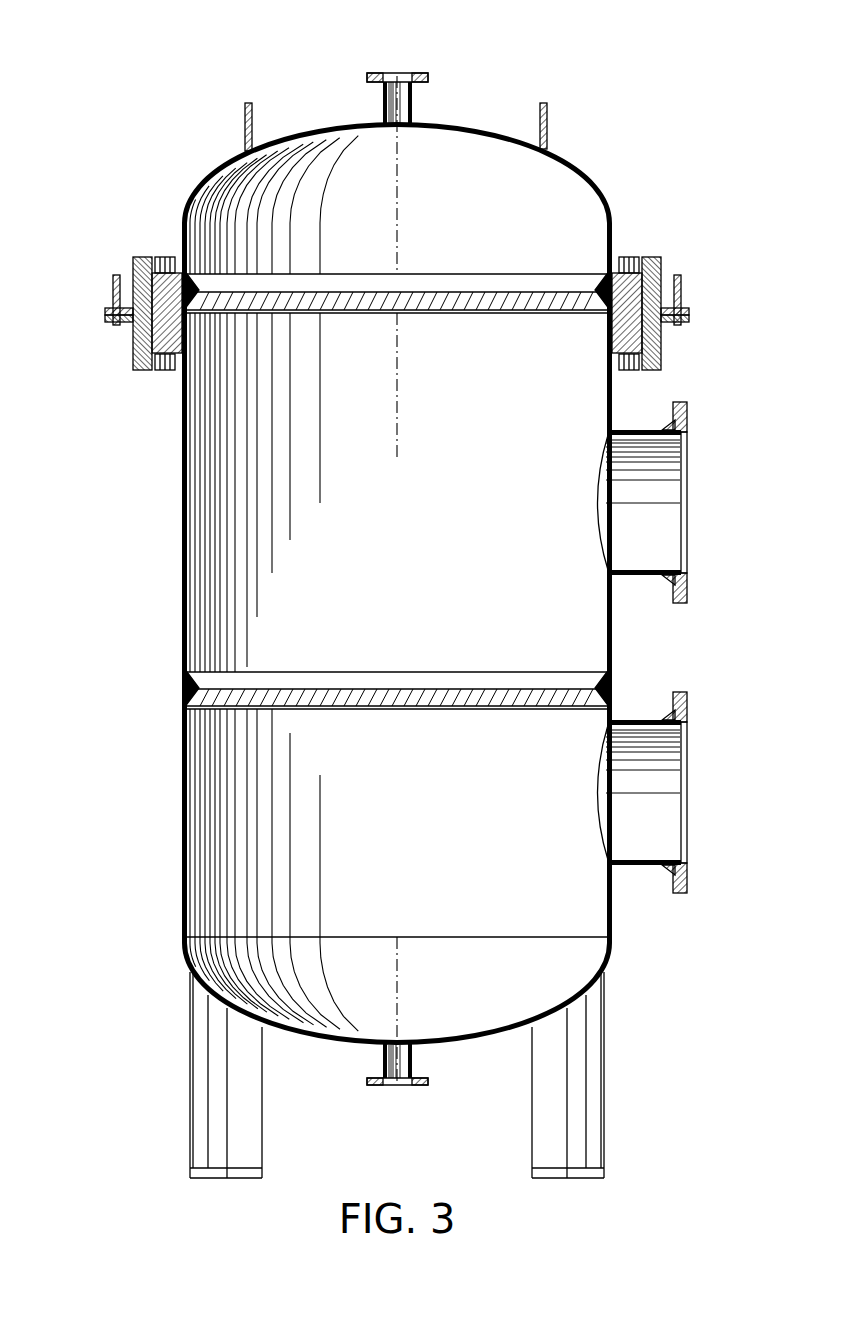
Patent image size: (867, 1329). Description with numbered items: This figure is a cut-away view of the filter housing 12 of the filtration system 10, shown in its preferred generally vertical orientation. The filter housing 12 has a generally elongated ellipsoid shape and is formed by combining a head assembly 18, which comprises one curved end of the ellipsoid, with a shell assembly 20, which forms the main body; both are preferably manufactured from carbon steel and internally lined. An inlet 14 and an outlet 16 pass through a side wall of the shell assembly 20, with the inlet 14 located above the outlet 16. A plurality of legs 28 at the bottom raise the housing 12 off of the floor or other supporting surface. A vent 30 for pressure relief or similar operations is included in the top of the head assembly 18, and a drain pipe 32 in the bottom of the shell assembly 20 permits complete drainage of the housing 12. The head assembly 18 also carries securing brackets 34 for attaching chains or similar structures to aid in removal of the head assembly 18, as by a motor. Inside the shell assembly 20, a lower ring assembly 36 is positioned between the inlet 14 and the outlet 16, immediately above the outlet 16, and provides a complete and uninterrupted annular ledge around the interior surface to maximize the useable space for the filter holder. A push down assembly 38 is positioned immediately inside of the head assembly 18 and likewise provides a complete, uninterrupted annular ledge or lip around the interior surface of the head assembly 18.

The filtration system 10 is at (112, 69).
The filter housing 12 is at (640, 120).
The inlet 14 is at (688, 461).
The outlet 16 is at (688, 748).
The head assembly 18 is at (201, 188).
The shell assembly 20 is at (182, 570).
The legs 28 is at (606, 1065).
The vent 30 is at (394, 72).
The drain pipe 32 is at (397, 1091).
The securing brackets 34 is at (541, 102).
The lower ring assembly 36 is at (212, 681).
The push down assembly 38 is at (583, 280).